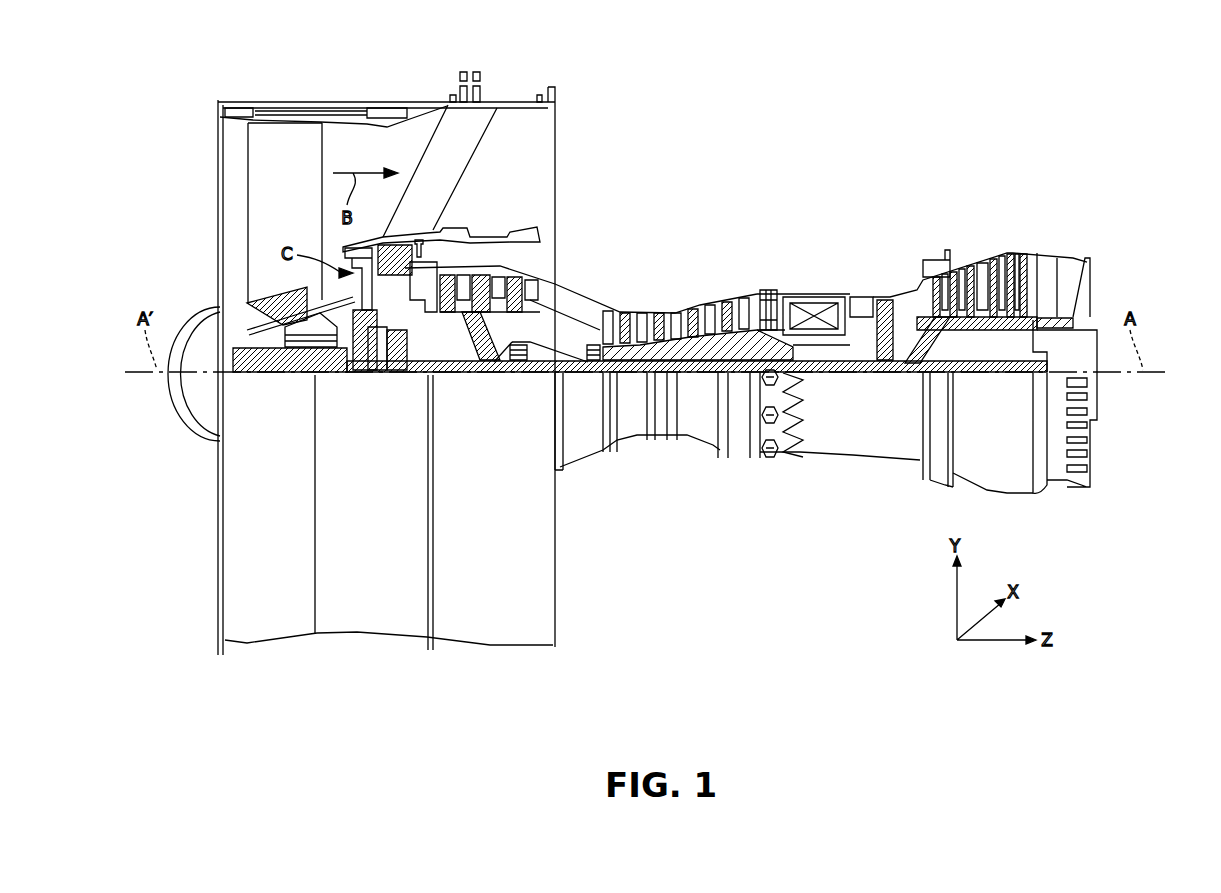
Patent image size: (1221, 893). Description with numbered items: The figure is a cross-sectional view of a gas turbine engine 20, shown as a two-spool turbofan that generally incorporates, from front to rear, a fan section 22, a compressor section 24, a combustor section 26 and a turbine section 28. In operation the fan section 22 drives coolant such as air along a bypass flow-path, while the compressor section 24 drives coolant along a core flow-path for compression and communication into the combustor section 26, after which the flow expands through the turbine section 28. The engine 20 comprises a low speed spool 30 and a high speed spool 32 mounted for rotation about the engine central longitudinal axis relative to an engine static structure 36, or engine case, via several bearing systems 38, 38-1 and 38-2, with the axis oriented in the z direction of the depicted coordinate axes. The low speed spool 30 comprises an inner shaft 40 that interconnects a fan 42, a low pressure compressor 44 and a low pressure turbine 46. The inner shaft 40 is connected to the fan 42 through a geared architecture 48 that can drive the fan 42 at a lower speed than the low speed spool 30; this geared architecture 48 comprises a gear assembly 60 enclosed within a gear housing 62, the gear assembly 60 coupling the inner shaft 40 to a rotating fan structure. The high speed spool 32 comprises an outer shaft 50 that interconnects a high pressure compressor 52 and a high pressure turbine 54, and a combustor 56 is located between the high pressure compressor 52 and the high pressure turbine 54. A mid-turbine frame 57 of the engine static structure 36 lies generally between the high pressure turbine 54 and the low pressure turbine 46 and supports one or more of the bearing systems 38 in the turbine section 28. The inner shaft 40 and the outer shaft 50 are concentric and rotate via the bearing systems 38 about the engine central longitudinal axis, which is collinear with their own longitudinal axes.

The gas turbine engine 20 is at (840, 122).
The fan section 22 is at (408, 86).
The compressor section 24 is at (432, 194).
The combustor section 26 is at (853, 194).
The turbine section 28 is at (1040, 194).
The low speed spool 30 is at (703, 374).
The high speed spool 32 is at (753, 290).
The engine static structure 36 is at (740, 432).
The bearing system 38 is at (910, 373).
The bearing system 38-1 is at (287, 372).
The bearing system 38-2 is at (515, 368).
The inner shaft 40 is at (573, 380).
The fan 42 is at (263, 224).
The low pressure compressor 44 is at (495, 282).
The low pressure turbine 46 is at (1007, 251).
The geared architecture 48 is at (388, 378).
The outer shaft 50 is at (813, 373).
The high pressure compressor 52 is at (700, 308).
The high pressure turbine 54 is at (865, 297).
The combustor 56 is at (820, 293).
The mid-turbine frame 57 is at (907, 290).
The gear assembly 60 is at (396, 382).
The gear housing 62 is at (367, 367).